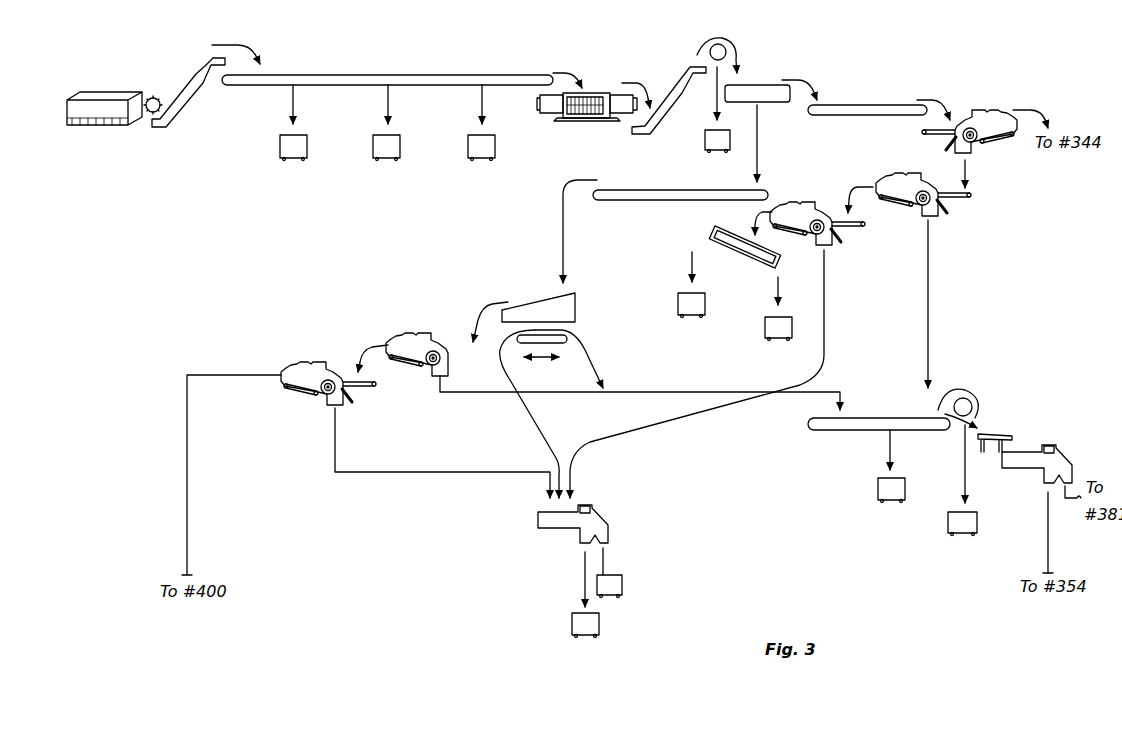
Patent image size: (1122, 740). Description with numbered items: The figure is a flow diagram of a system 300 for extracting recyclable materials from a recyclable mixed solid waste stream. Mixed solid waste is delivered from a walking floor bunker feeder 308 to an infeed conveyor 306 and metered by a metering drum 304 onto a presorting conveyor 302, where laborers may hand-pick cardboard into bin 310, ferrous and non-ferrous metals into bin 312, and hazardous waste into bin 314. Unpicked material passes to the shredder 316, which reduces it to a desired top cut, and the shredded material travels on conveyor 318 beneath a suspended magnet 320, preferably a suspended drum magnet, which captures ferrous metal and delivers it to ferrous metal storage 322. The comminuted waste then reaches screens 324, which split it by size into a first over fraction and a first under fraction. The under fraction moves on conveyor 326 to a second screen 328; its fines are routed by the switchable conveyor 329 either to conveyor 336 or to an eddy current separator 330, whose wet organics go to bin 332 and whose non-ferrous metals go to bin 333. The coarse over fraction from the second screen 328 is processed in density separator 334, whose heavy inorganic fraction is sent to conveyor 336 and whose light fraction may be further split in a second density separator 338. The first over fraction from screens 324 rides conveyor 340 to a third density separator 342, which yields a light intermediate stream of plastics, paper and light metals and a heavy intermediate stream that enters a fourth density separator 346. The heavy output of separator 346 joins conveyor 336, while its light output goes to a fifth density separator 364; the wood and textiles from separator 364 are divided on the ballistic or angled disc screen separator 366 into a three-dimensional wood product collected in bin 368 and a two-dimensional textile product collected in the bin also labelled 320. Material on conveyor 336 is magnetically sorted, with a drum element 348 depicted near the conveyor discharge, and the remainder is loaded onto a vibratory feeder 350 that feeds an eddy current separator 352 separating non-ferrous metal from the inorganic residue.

The system 300 is at (923, 50).
The presorting conveyor 302 is at (280, 78).
The metering drum 304 is at (153, 95).
The infeed conveyor 306 is at (190, 85).
The walking floor bunker feeder 308 is at (102, 97).
The bin 310 is at (288, 147).
The bin 312 is at (392, 160).
The bin 314 is at (482, 160).
The shredder 316 is at (593, 93).
The conveyor 318 is at (668, 92).
The suspended magnet 320 is at (730, 45).
The ferrous metal storage 322 is at (704, 141).
The screens 324 is at (753, 90).
The conveyor 326 is at (652, 193).
The second screen 328 is at (577, 305).
The conveyor 329 is at (568, 343).
The eddy current separator 330 is at (597, 518).
The bin 332 is at (572, 622).
The bin 333 is at (622, 583).
The density separator 334 is at (428, 333).
The conveyor 336 is at (872, 420).
The second density separator 338 is at (325, 362).
The conveyor 340 is at (853, 107).
The third density separator 342 is at (995, 113).
The fourth density separator 346 is at (923, 217).
The roller 348 is at (973, 398).
The vibratory feeder 350 is at (1002, 435).
The eddy current separator 352 is at (1030, 462).
The fifth density separator 364 is at (812, 202).
The ballistic or angled disc screen separator 366 is at (707, 230).
The bin 368 is at (778, 343).